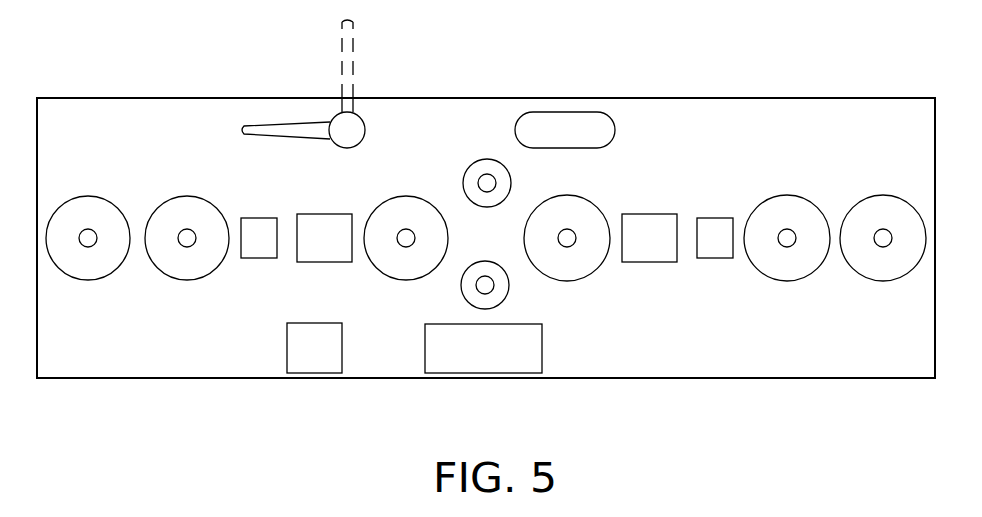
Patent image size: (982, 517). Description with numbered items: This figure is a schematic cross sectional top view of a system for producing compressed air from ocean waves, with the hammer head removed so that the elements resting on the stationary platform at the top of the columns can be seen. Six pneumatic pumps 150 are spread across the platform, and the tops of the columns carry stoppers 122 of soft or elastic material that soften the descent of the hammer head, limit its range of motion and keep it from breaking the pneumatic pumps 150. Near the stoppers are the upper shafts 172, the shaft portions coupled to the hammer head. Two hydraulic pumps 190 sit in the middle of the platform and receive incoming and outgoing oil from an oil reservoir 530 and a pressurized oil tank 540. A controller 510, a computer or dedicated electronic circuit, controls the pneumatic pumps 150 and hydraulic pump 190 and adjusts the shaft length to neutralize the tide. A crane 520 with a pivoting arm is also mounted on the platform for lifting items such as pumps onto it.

The pneumatic pump 150 is at (80, 281).
The stopper 122 is at (260, 218).
The upper shaft 172 is at (327, 214).
The hydraulic pump 190 is at (463, 178).
The controller 510 is at (303, 374).
The crane 520 is at (366, 123).
The oil reservoir 530 is at (477, 374).
The pressurized oil tank 540 is at (582, 112).